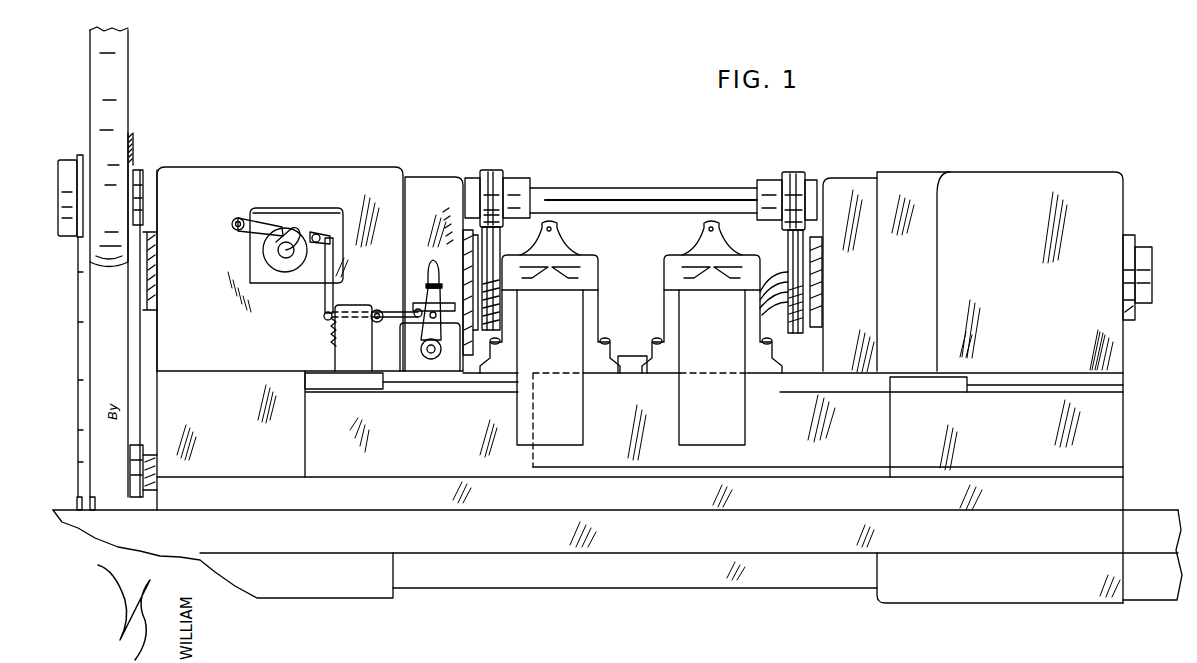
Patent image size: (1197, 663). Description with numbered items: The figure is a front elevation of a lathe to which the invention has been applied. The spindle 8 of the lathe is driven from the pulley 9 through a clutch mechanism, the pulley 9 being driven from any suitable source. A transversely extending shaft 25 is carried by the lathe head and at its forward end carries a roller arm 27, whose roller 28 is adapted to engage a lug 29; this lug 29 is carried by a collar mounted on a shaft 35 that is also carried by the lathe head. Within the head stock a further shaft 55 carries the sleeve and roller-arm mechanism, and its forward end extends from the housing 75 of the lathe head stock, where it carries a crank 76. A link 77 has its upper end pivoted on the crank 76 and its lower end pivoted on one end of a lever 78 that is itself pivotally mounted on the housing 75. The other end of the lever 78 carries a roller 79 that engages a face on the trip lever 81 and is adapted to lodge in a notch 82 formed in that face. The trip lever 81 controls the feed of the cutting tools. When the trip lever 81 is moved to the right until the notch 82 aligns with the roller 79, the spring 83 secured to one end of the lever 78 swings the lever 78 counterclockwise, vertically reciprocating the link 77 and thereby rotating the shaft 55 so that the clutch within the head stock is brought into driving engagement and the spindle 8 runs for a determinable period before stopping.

The spindle 8 is at (475, 262).
The pulley 9 is at (90, 142).
The transversely extending shaft 25 is at (233, 230).
The roller arm 27 is at (252, 214).
The roller 28 is at (297, 230).
The lug 29 is at (293, 226).
The shaft 35 is at (285, 252).
The shaft 55 is at (317, 234).
The housing 75 is at (373, 190).
The crank 76 is at (323, 238).
The link 77 is at (389, 312).
The lever 78 is at (433, 262).
The roller 79 is at (441, 338).
The trip lever 81 is at (447, 248).
The notch 82 is at (421, 314).
The spring 83 is at (332, 328).